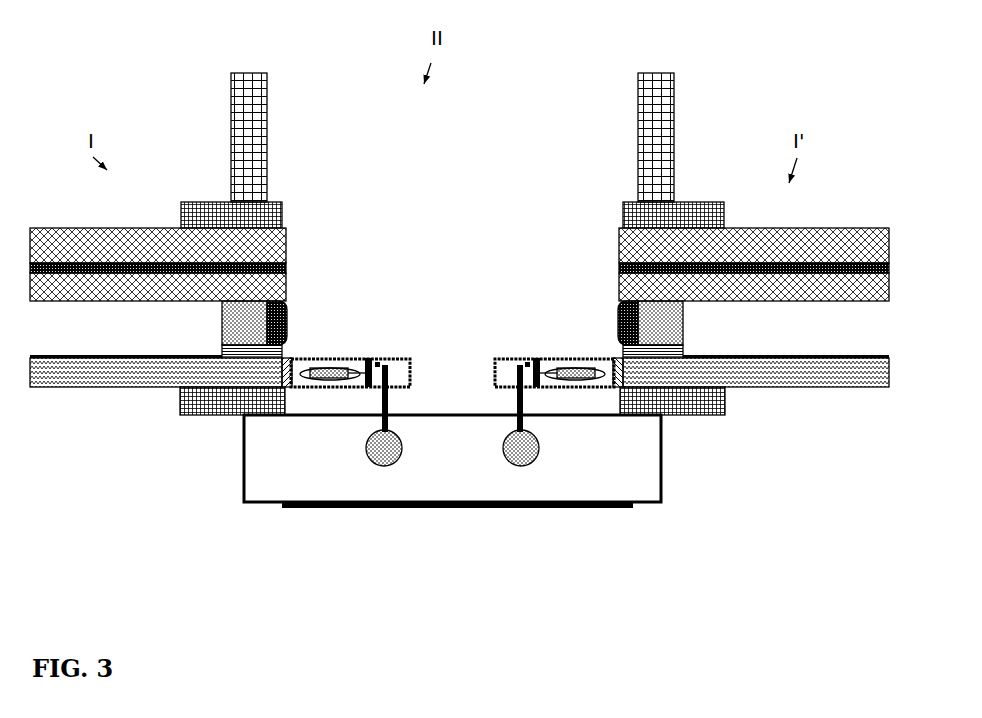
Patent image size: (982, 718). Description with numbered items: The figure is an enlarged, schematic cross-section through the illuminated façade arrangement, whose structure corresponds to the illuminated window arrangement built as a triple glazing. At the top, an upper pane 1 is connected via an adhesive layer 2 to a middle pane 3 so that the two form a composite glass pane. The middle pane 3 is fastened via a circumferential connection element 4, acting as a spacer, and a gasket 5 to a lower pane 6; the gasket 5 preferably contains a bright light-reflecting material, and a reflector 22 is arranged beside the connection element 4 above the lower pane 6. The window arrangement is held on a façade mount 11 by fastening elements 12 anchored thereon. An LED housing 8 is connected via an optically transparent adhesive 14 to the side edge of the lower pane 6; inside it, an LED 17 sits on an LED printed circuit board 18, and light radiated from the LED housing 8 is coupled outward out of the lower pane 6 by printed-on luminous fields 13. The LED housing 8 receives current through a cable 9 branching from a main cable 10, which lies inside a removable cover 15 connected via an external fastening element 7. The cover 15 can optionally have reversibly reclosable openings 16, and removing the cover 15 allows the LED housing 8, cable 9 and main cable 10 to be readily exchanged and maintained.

The upper pane 1 is at (289, 242).
The adhesive layer 2 is at (292, 282).
The middle pane 3 is at (290, 300).
The circumferential connection element 4 is at (221, 315).
The gasket 5 is at (290, 322).
The lower pane 6 is at (93, 388).
The external fastening element 7 is at (215, 417).
The LED housing 8 is at (390, 350).
The cable 9 is at (392, 400).
The main cable 10 is at (405, 462).
The façade mount 11 is at (281, 157).
The fastening element 12 is at (196, 195).
The luminous fields 13 is at (128, 350).
The optically transparent adhesive 14 is at (283, 387).
The cover 15 is at (668, 458).
The opening 16 is at (552, 514).
The LED 17 is at (575, 364).
The LED printed circuit board 18 is at (368, 357).
The reflector 22 is at (220, 350).